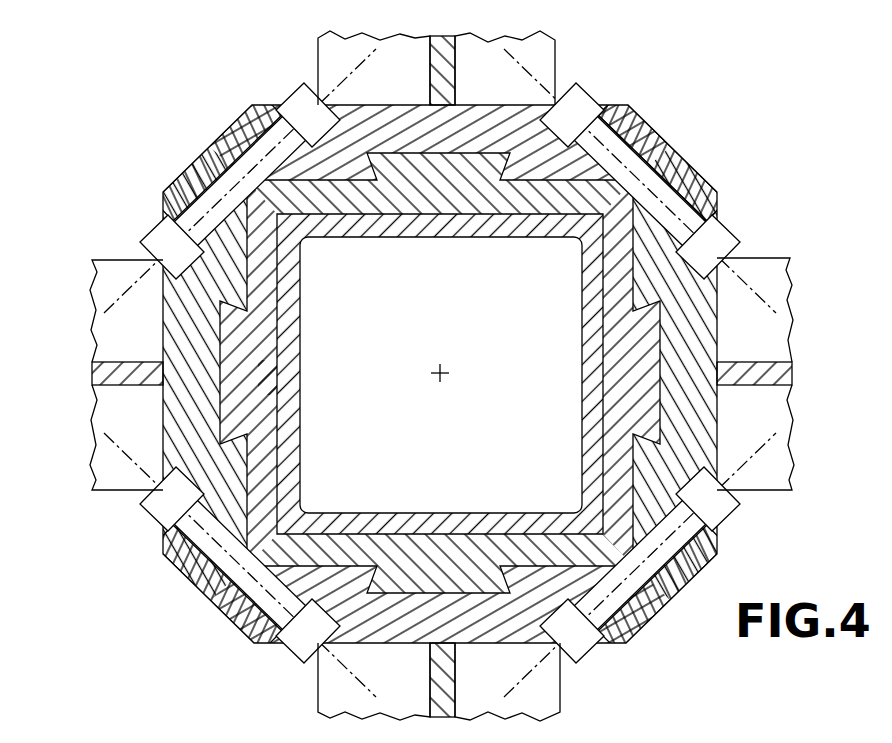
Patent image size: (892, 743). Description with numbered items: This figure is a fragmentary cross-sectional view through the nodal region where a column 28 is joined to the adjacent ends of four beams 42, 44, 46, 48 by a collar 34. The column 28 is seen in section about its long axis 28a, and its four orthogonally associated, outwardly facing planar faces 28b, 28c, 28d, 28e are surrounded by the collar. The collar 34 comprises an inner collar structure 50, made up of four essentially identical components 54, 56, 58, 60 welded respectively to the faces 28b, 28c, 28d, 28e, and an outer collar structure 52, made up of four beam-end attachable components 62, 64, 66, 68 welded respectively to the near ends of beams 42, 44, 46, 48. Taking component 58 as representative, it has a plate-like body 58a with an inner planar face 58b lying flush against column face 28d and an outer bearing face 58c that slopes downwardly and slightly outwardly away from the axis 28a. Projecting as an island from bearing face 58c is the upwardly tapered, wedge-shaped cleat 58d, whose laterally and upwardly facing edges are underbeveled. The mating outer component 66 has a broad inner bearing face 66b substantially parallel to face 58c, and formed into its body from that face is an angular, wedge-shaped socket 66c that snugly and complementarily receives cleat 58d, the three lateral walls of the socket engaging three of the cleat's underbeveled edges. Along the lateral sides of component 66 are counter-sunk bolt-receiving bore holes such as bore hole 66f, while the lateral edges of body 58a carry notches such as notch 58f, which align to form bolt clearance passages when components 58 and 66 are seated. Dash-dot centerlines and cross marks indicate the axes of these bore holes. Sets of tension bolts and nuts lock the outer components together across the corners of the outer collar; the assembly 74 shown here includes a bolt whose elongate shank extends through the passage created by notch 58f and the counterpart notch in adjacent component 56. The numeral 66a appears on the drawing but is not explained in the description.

The column 28 is at (506, 241).
The long axis of column 28a is at (441, 368).
The planar face of column 28b is at (643, 440).
The planar face of column 28c is at (487, 545).
The planar face of column 28d is at (230, 515).
The planar face of column 28e is at (404, 210).
The collar 34 is at (177, 146).
The beam 42 is at (794, 262).
The beam 44 is at (566, 684).
The beam 46 is at (88, 270).
The beam 48 is at (316, 66).
The inner collar structure 50 is at (570, 179).
The outer collar structure 52 is at (682, 152).
The inner collar component 54 is at (653, 353).
The inner collar component 56 is at (606, 551).
The inner collar component 58 is at (257, 498).
The component body 58a is at (253, 332).
The inner planar face 58b is at (262, 380).
The outer bearing face 58c is at (230, 452).
The cleat 58d is at (224, 337).
The notch 58f is at (230, 580).
The inner collar component 60 is at (292, 195).
The outer collar component 62 is at (702, 197).
The outer collar component 64 is at (649, 622).
The outer collar component 66 is at (185, 569).
The nut 66a is at (160, 200).
The inner bearing face 66b is at (253, 474).
The socket 66c is at (222, 384).
The bolt-receiving bore hole 66f is at (327, 707).
The outer collar component 68 is at (615, 104).
The nut and bolt assembly 74 is at (289, 658).